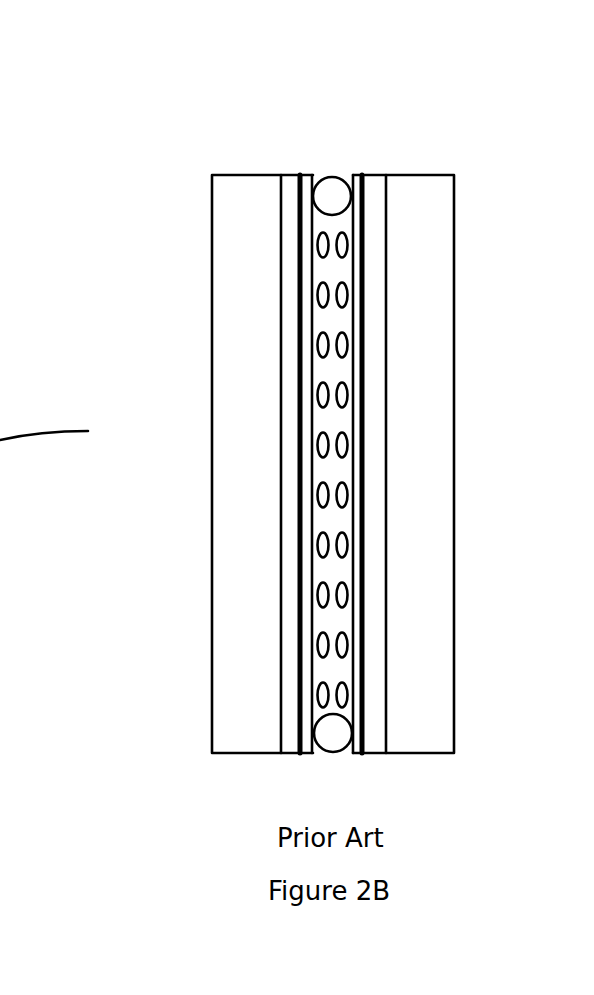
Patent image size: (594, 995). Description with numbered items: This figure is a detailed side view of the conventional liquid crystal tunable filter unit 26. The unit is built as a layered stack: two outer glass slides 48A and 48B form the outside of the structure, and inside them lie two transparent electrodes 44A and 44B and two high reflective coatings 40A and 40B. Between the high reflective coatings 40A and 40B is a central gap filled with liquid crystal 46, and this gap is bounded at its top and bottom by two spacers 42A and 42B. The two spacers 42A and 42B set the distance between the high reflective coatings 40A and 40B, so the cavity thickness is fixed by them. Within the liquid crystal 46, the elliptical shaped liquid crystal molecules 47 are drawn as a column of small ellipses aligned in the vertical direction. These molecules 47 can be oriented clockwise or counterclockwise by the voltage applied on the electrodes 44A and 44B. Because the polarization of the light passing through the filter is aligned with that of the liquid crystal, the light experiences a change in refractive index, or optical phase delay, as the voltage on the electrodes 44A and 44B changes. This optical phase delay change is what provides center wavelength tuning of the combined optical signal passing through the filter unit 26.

The liquid crystal tunable filter unit 26 is at (333, 57).
The high reflective coating 40A is at (304, 176).
The high reflective coating 40B is at (358, 755).
The spacer 42A is at (334, 177).
The spacer 42B is at (333, 755).
The transparent electrode 44A is at (280, 295).
The transparent electrode 44B is at (387, 313).
The liquid crystal 46 is at (305, 367).
The liquid crystal molecules 47 is at (325, 480).
The glass slide 48A is at (213, 680).
The glass slide 48B is at (456, 657).